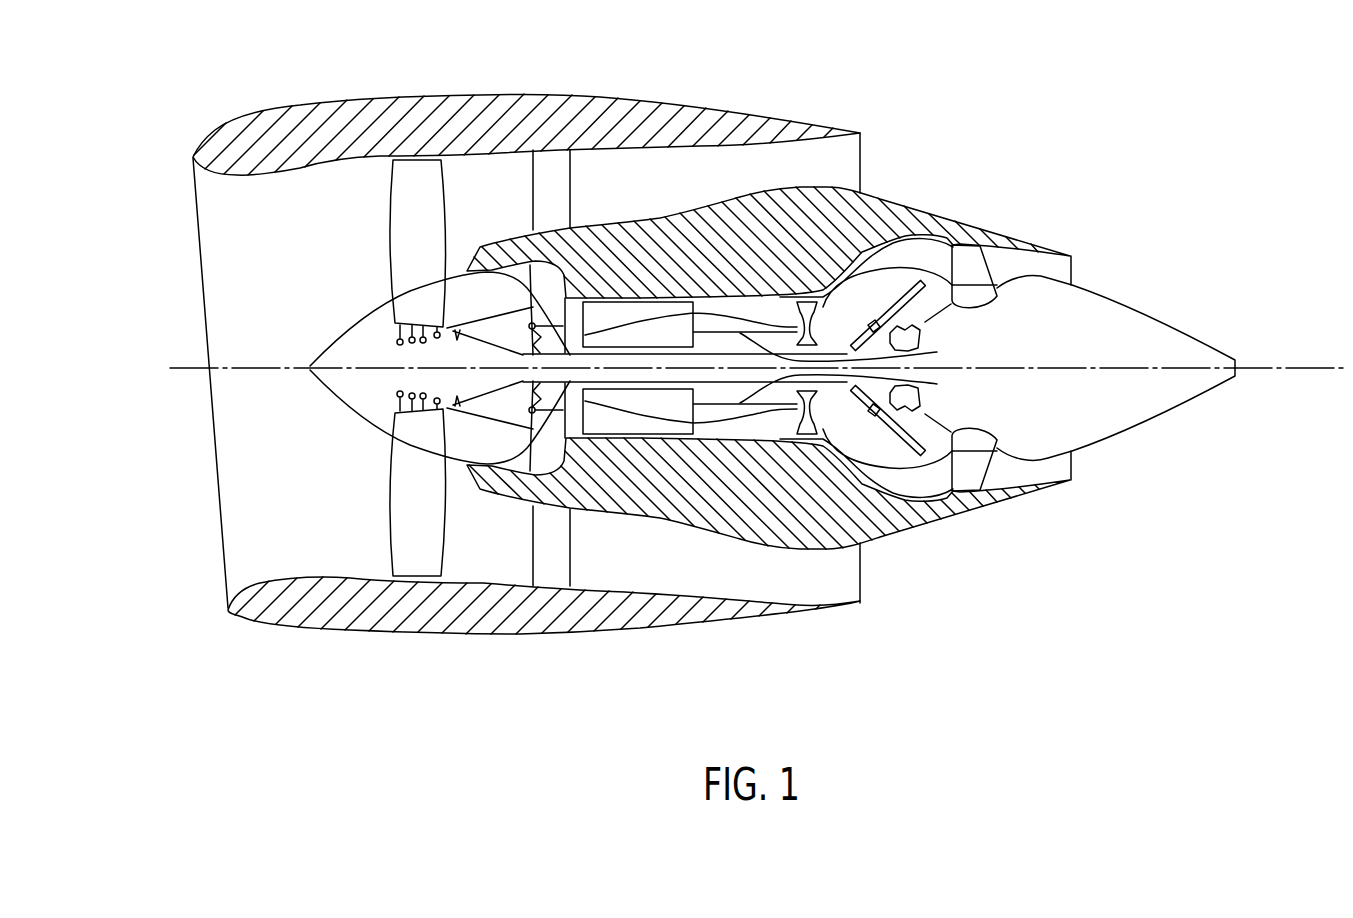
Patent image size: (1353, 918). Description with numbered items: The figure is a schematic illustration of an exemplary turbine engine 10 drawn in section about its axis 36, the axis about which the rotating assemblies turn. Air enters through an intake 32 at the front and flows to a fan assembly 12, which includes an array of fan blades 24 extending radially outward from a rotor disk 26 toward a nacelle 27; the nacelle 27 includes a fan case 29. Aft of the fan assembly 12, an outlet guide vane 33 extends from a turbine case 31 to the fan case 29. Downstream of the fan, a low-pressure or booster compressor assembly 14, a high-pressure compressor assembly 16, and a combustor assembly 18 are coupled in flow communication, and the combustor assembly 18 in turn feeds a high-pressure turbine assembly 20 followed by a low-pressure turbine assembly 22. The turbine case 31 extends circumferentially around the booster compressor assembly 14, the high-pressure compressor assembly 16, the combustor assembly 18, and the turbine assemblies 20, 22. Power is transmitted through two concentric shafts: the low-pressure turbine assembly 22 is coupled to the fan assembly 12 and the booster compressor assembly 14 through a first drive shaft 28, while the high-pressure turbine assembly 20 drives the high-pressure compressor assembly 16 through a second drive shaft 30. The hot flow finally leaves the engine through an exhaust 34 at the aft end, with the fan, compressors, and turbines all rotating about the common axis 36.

The turbine engine 10 is at (1000, 77).
The fan assembly 12 is at (382, 238).
The low-pressure or booster compressor assembly 14 is at (480, 240).
The high-pressure compressor assembly 16 is at (630, 302).
The combustor assembly 18 is at (746, 287).
The high-pressure turbine assembly 20 is at (810, 277).
The low-pressure turbine assembly 22 is at (888, 232).
The fan blades 24 is at (432, 253).
The rotor disk 26 is at (382, 360).
The nacelle 27 is at (292, 128).
The first drive shaft 28 is at (567, 297).
The fan case 29 is at (387, 157).
The second drive shaft 30 is at (928, 353).
The turbine case 31 is at (800, 200).
The intake 32 is at (156, 203).
The outlet guide vane 33 is at (555, 170).
The exhaust 34 is at (1084, 266).
The axis 36 is at (1280, 367).